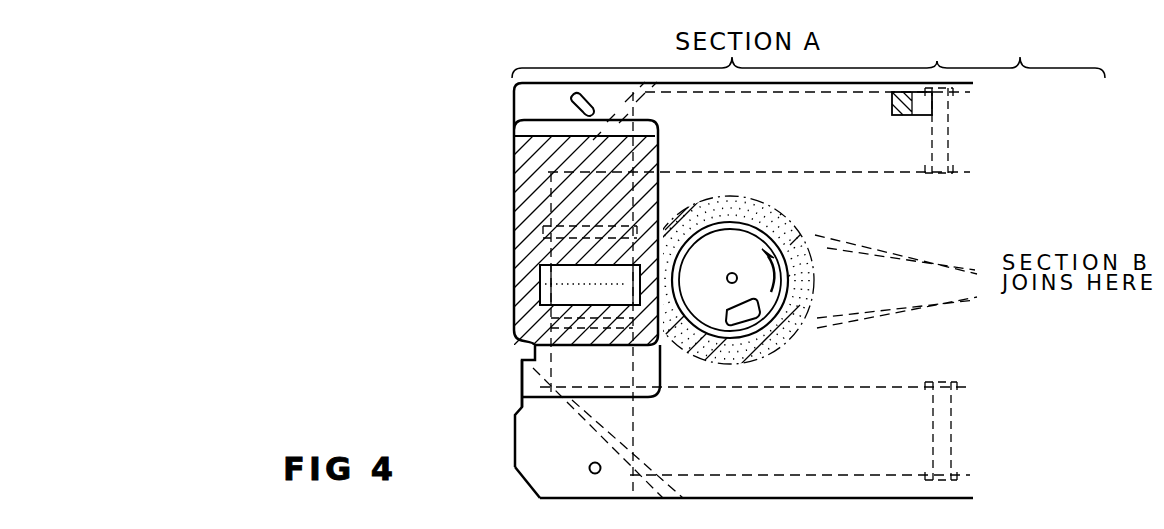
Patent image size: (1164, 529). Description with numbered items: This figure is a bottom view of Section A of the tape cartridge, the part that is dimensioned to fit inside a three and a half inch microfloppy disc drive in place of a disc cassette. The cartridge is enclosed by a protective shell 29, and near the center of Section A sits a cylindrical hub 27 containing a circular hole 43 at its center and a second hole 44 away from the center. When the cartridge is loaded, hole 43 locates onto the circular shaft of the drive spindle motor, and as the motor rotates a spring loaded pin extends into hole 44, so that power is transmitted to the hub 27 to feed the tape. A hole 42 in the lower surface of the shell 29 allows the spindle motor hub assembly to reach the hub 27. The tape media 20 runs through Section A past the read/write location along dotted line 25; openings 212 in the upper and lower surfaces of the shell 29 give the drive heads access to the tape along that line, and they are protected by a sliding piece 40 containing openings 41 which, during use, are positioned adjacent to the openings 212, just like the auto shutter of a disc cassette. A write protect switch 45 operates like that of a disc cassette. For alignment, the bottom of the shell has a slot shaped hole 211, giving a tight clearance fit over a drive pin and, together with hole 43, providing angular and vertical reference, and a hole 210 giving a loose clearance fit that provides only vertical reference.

The sliding piece 40 is at (514, 222).
The slot shaped hole 211 is at (573, 92).
The dotted line 25 is at (627, 284).
The tape media 20 is at (585, 293).
The openings 212 is at (514, 308).
The opening 41 is at (482, 369).
The protective shell 29 is at (515, 448).
The hole 210 is at (592, 464).
The hole 42 is at (790, 283).
The cylindrical hub 27 is at (742, 262).
The circular hole 43 is at (727, 278).
The second hole 44 is at (730, 316).
The write protect switch 45 is at (897, 115).